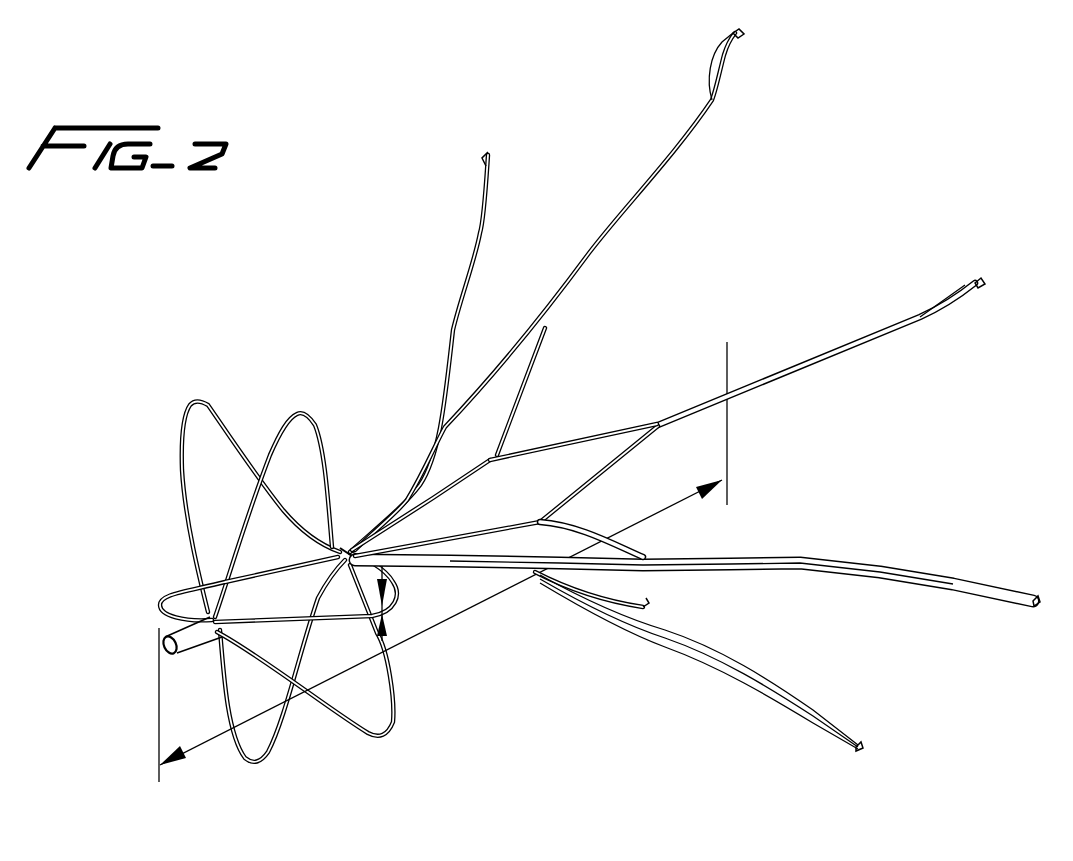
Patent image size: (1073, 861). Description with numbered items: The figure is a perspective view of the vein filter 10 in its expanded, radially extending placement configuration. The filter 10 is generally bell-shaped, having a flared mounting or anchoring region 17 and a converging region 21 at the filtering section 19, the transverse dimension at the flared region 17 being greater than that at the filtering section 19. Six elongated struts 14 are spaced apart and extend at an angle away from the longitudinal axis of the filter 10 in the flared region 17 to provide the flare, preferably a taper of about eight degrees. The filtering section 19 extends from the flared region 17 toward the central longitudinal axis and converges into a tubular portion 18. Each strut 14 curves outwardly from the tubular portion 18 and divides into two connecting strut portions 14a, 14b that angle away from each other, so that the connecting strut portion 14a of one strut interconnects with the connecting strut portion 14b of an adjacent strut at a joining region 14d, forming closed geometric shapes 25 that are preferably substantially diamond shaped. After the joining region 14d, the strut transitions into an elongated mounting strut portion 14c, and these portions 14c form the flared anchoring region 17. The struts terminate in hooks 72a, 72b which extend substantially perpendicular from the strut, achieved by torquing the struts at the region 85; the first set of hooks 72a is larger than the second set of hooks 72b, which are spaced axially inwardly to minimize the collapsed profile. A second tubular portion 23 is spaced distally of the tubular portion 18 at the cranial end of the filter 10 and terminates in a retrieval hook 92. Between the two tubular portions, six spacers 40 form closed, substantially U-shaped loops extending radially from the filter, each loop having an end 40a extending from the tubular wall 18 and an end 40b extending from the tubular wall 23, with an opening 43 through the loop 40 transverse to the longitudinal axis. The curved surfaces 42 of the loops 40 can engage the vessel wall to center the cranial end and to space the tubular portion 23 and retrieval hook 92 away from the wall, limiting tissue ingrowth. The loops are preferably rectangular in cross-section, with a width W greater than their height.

The filter 10 is at (360, 313).
The elongated struts 14 is at (418, 480).
The connecting filter strut portion 14a is at (568, 440).
The connecting filter strut portion 14b is at (532, 382).
The mounting strut portions 14c is at (650, 193).
The joining region 14d is at (560, 316).
The flared region 17 is at (591, 181).
The tubular portion 18 is at (385, 560).
The filtering section 19 is at (462, 588).
The converging region 21 is at (389, 486).
The tubular portion 23 is at (201, 637).
The closed geometric shapes 25 is at (437, 490).
The spacers 40 is at (184, 484).
The end of spacer loop 40a is at (350, 540).
The end of spacer loop 40b is at (203, 595).
The curved surfaces 42 is at (194, 402).
The opening 43 is at (425, 772).
The first set of hooks 72a is at (744, 38).
The second set of hooks 72b is at (973, 280).
The torquing region 85 is at (713, 100).
The retrieval hook 92 is at (163, 647).
The width W is at (388, 607).